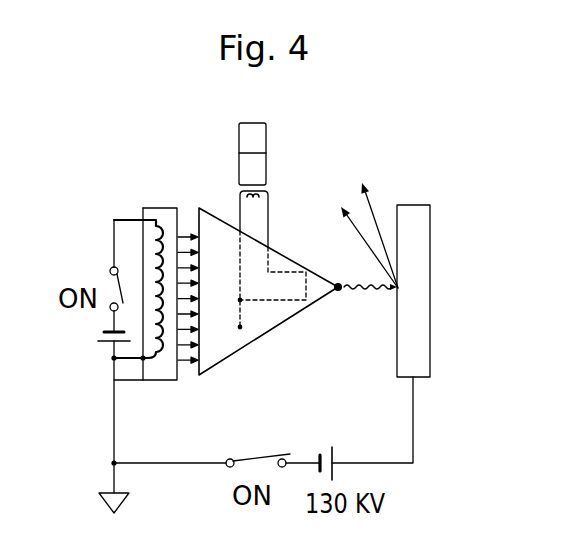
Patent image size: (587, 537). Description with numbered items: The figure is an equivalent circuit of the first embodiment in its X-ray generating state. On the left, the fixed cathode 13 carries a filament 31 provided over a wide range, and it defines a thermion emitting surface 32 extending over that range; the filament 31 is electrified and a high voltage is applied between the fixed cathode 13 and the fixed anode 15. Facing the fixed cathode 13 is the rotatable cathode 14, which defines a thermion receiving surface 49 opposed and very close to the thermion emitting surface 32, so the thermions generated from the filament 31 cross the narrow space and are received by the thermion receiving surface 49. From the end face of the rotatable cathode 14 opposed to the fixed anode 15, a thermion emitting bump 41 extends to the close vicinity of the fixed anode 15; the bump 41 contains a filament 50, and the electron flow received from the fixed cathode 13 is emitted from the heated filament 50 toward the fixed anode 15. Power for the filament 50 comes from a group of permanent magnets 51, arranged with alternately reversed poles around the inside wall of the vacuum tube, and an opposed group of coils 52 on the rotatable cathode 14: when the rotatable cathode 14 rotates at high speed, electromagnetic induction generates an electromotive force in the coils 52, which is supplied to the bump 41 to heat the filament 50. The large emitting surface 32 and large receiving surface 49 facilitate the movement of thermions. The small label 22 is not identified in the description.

The fixed cathode 13 is at (140, 378).
The rotatable cathode 14 is at (278, 253).
The fixed anode 15 is at (432, 300).
The focal spot 22 is at (320, 290).
The filament 31 is at (164, 224).
The thermion emitting surface 32 is at (181, 220).
The thermion emitting bump 41 is at (340, 292).
The thermion receiving surface 49 is at (193, 375).
The filament 50 is at (306, 303).
The permanent magnets 51 is at (266, 144).
The coils 52 is at (270, 188).